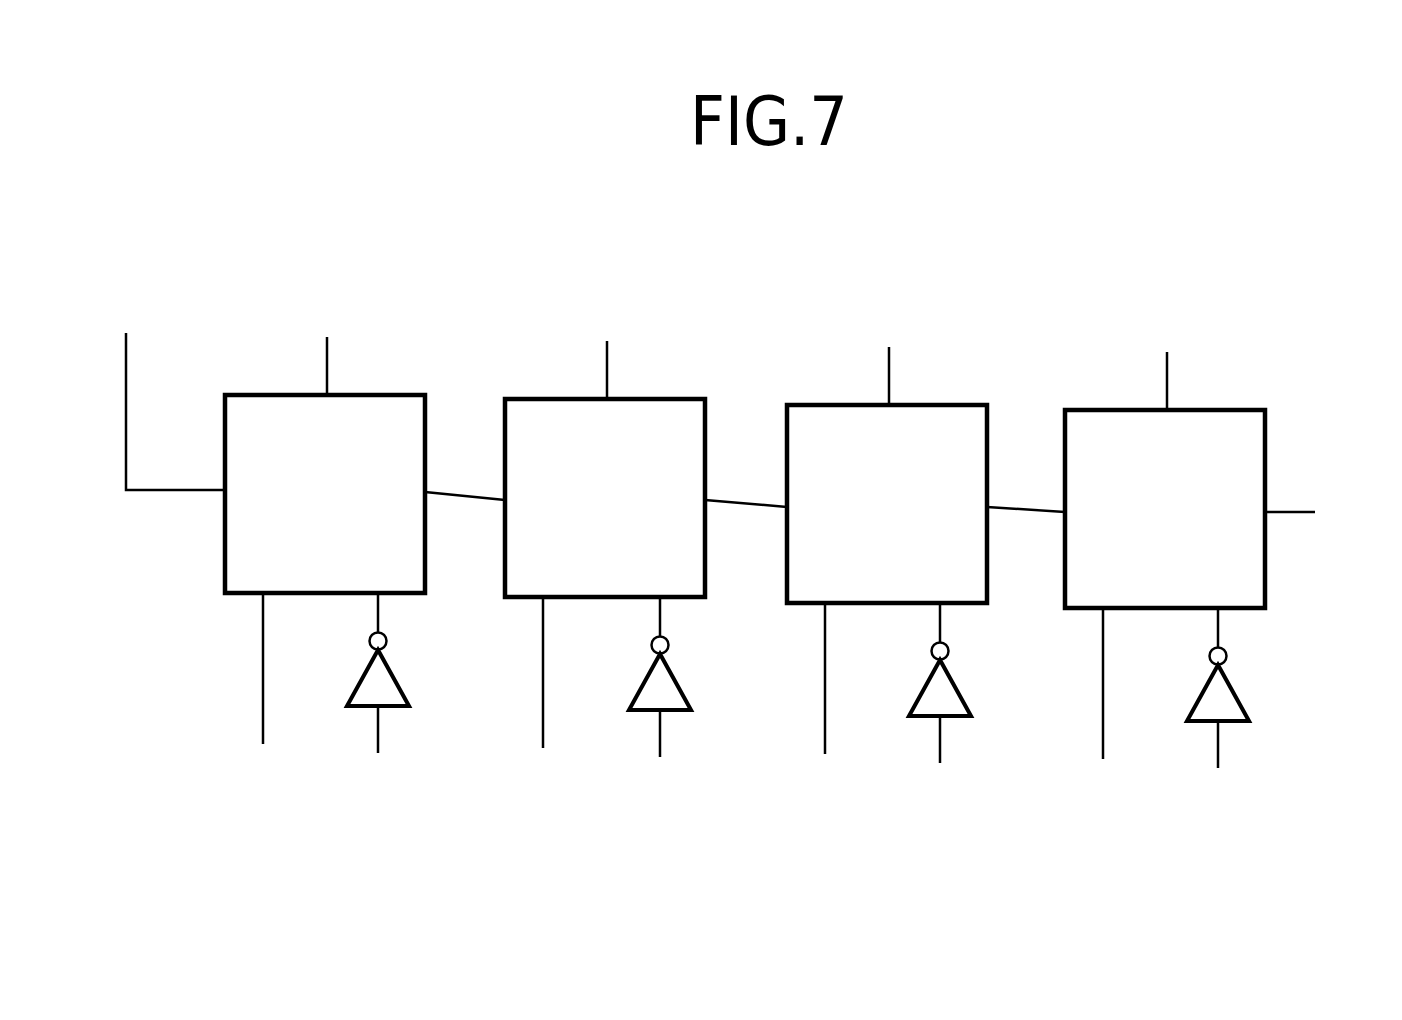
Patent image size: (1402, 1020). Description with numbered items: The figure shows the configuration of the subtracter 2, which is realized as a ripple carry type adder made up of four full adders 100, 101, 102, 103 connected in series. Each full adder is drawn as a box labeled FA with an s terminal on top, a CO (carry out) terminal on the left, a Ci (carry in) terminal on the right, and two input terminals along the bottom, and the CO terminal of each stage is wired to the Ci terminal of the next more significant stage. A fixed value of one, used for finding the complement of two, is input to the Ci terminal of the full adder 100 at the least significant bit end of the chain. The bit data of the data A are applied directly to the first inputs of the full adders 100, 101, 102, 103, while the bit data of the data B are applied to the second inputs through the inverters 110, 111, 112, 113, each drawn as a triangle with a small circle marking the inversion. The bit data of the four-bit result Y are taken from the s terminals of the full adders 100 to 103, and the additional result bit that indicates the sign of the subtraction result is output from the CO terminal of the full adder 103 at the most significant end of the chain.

The subtracter 2 is at (1334, 203).
The full adder 103 is at (393, 395).
The full adder 102 is at (673, 399).
The full adder 101 is at (955, 405).
The full adder 100 is at (1233, 410).
The inverter 113 is at (398, 679).
The inverter 112 is at (680, 683).
The inverter 111 is at (960, 689).
The inverter 110 is at (1238, 694).